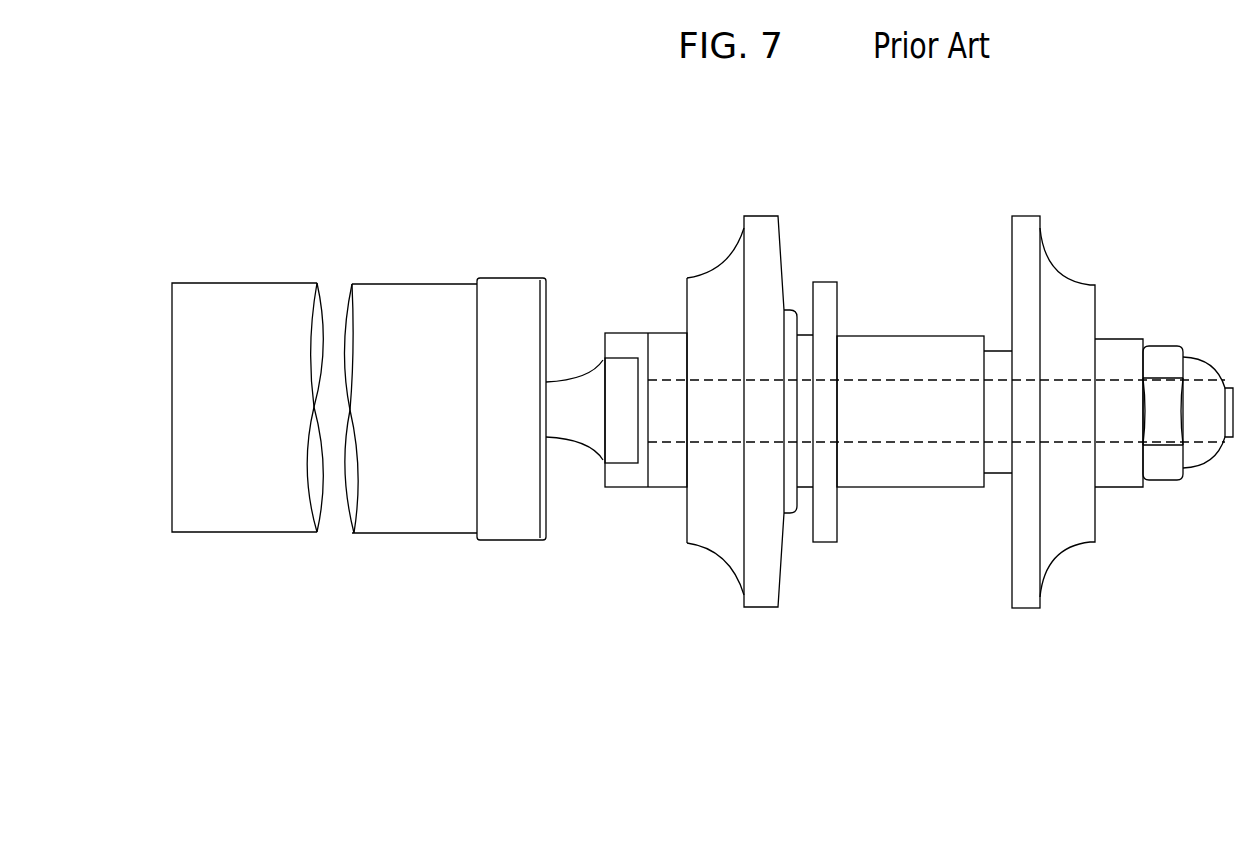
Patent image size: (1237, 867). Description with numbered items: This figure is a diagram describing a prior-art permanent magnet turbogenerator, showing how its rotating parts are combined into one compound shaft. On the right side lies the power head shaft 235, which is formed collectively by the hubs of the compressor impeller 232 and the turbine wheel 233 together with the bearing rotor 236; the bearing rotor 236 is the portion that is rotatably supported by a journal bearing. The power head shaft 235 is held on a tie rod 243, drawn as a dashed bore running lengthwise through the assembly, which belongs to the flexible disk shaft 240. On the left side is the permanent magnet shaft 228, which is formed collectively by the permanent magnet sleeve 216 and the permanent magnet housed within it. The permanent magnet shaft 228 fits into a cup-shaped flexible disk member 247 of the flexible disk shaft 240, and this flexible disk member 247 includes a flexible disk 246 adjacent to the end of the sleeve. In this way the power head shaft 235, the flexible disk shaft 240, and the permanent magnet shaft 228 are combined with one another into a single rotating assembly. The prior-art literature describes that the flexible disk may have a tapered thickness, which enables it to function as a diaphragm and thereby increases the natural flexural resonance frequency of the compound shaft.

The permanent magnet shaft 228 is at (257, 279).
The permanent magnet sleeve 216 is at (400, 285).
The flexible disk 246 is at (546, 510).
The flexible disk member 247 is at (574, 292).
The flexible disk shaft 240 is at (696, 258).
The compressor impeller 232 is at (783, 255).
The power head shaft 235 is at (914, 240).
The bearing rotor 236 is at (907, 490).
The tie rod 243 is at (935, 380).
The turbine wheel 233 is at (1097, 320).